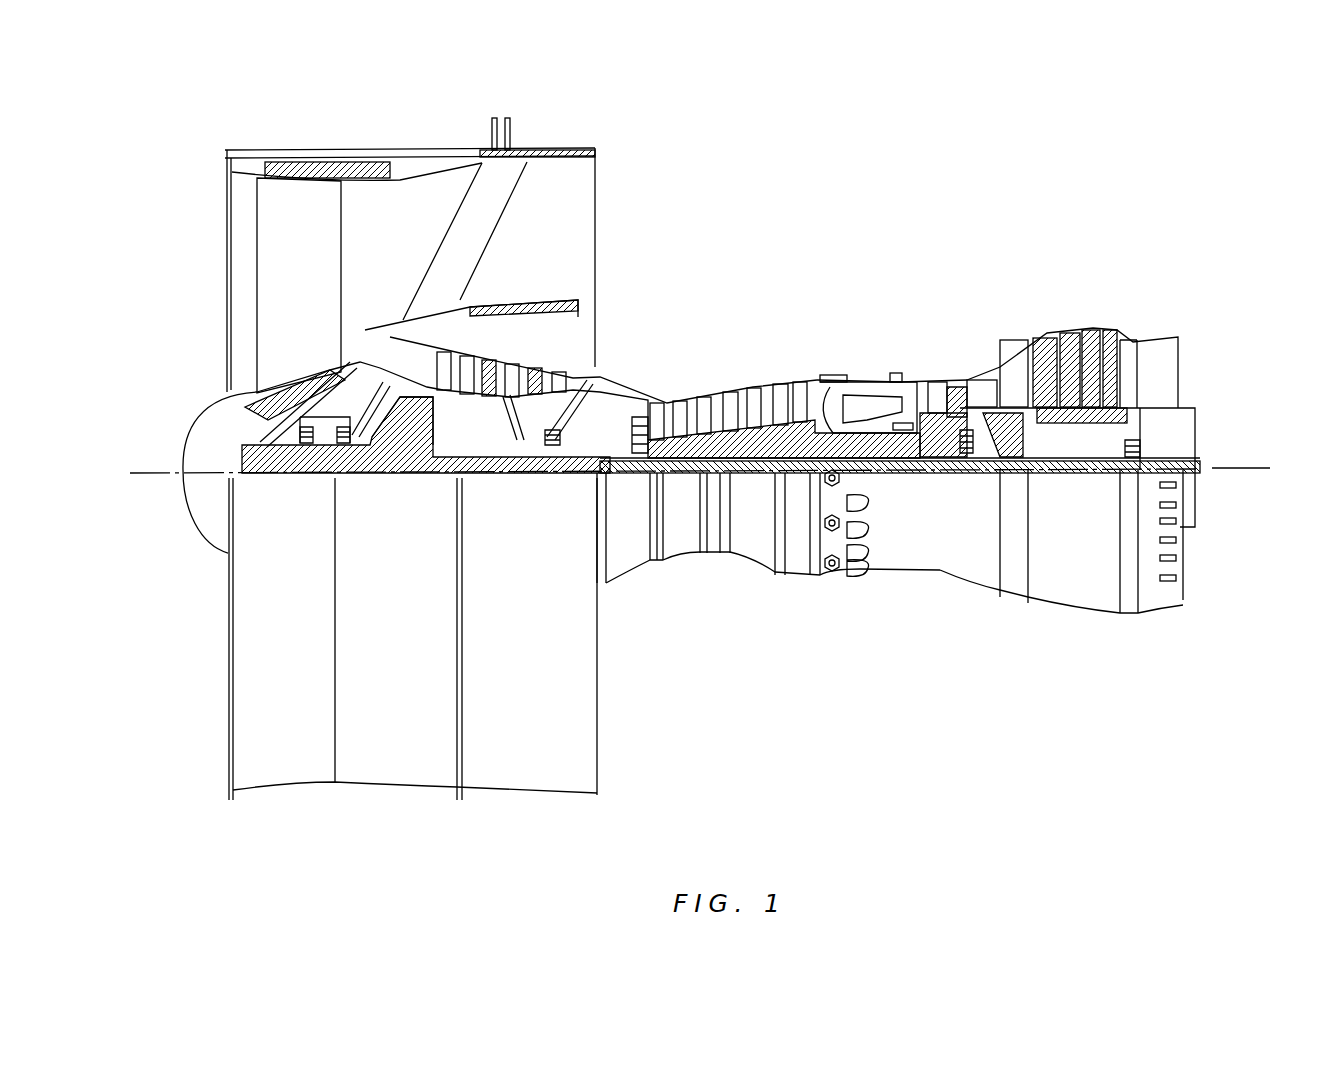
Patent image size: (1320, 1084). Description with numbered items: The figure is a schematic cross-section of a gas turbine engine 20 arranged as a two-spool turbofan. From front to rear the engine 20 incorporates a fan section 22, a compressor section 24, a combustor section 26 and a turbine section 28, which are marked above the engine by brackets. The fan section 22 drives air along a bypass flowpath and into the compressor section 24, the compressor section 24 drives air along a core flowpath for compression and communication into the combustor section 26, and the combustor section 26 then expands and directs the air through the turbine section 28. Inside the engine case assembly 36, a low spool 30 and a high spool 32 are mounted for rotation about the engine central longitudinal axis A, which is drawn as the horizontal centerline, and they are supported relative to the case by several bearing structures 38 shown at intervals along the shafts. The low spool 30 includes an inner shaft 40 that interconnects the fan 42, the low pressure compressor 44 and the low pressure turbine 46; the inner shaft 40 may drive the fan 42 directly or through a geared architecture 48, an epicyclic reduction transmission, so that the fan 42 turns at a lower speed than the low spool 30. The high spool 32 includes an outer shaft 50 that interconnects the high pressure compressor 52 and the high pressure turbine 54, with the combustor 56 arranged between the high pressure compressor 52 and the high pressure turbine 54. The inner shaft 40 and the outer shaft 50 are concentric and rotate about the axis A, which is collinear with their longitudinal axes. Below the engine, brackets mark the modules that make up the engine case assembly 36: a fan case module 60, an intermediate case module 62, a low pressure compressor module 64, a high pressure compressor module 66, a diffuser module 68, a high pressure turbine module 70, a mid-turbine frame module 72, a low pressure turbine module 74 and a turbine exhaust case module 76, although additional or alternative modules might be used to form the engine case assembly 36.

The gas turbine engine 20 is at (908, 183).
The fan section 22 is at (455, 133).
The compressor section 24 is at (463, 267).
The combustor section 26 is at (925, 267).
The turbine section 28 is at (1130, 267).
The low spool 30 is at (757, 475).
The high spool 32 is at (781, 394).
The engine case assembly 36 is at (196, 836).
The bearing structures 38 is at (308, 458).
The inner shaft 40 is at (622, 475).
The fan 42 is at (277, 297).
The low pressure compressor 44 is at (530, 352).
The low pressure turbine 46 is at (1067, 333).
The geared architecture 48 is at (418, 458).
The outer shaft 50 is at (883, 462).
The high pressure compressor 52 is at (733, 400).
The high pressure turbine 54 is at (933, 382).
The combustor 56 is at (867, 410).
The fan case module 60 is at (235, 818).
The intermediate case module 62 is at (370, 818).
The Low Pressure Compressor module 64 is at (598, 818).
The High Pressure Compressor module 66 is at (660, 818).
The diffuser module 68 is at (797, 818).
The High Pressure Turbine module 70 is at (917, 818).
The mid-turbine frame module 72 is at (1030, 818).
The Low Pressure Turbine module 74 is at (1030, 818).
The Turbine Exhaust Case module 76 is at (1120, 818).
The engine central longitudinal axis A is at (1262, 466).